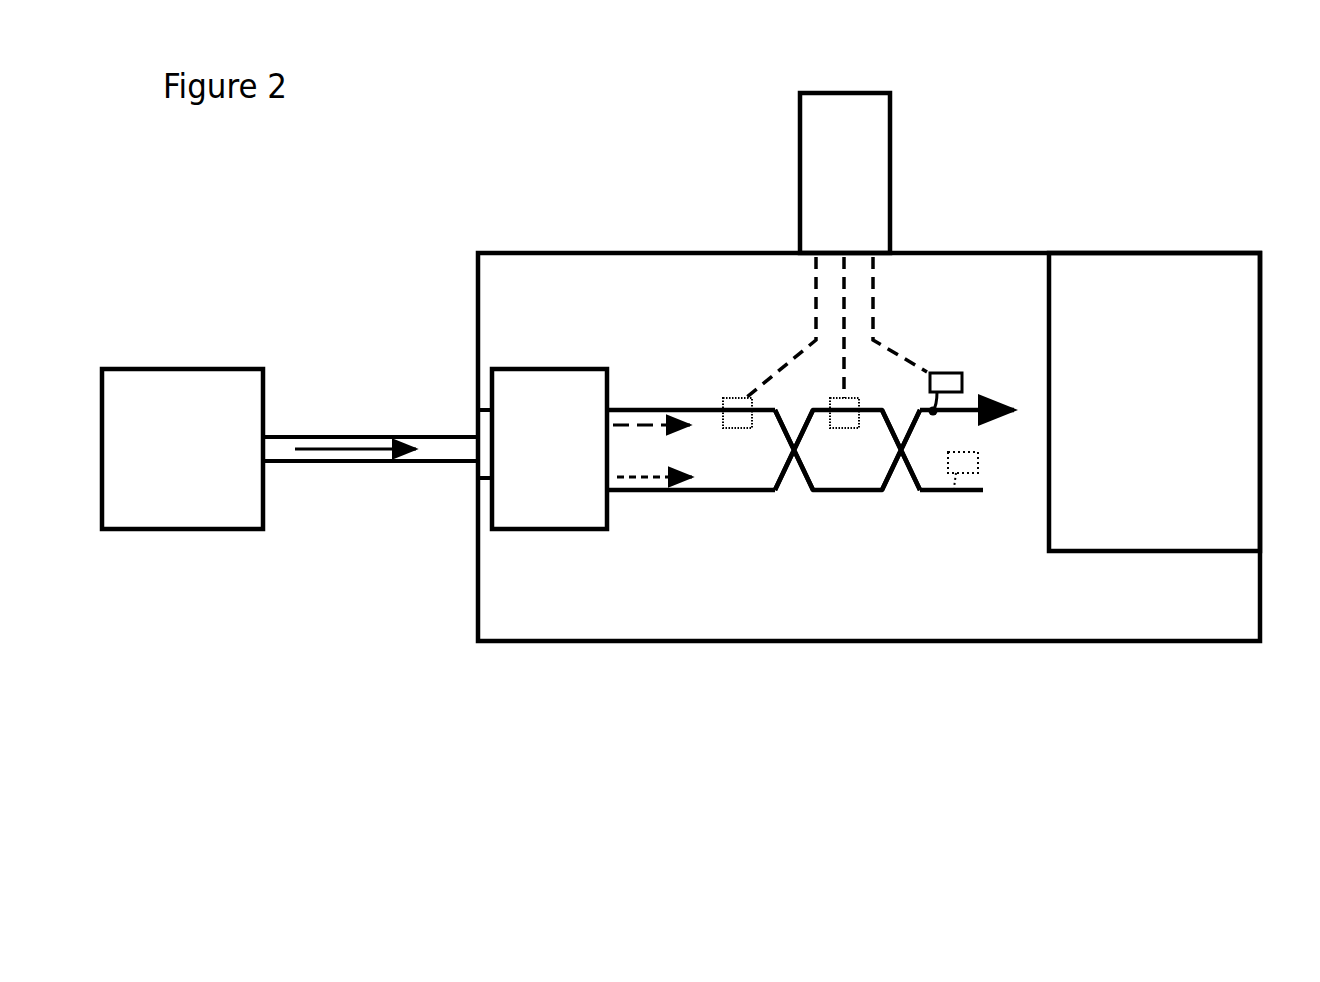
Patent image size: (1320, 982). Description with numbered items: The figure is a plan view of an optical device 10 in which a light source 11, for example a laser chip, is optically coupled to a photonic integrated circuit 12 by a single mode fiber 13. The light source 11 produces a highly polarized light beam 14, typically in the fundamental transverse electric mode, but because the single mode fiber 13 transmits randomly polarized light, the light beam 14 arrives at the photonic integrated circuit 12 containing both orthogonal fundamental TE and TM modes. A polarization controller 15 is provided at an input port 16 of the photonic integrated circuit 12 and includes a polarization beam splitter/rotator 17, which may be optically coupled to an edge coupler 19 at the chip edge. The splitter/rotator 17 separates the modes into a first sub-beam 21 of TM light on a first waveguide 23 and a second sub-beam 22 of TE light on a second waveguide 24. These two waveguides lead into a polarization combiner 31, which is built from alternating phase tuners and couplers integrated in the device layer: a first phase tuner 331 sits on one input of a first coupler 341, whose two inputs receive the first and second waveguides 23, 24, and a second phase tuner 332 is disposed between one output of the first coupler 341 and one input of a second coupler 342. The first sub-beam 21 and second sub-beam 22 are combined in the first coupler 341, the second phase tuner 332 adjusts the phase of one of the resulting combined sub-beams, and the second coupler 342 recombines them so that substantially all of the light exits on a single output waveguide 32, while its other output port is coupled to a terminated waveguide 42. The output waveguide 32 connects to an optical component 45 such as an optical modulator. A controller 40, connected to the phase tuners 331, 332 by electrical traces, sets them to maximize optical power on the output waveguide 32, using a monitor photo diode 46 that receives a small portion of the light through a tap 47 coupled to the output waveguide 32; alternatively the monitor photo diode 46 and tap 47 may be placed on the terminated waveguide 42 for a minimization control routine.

The optical device 10 is at (418, 194).
The light source 11 is at (167, 505).
The photonic integrated circuit 12 is at (1184, 615).
The single mode fiber 13 is at (335, 437).
The light beam 14 is at (373, 450).
The polarization controller 15 is at (578, 335).
The input port 16 is at (477, 447).
The polarization beam splitter/rotator 17 is at (515, 498).
The edge coupler 19 is at (485, 415).
The first sub-beam 21 is at (690, 408).
The second sub-beam 22 is at (674, 491).
The first waveguide 23 is at (632, 408).
The second waveguide 24 is at (630, 491).
The polarization combiner 31 is at (853, 528).
The output waveguide 32 is at (1009, 417).
The first phase tuner 331 is at (741, 397).
The second phase tuner 332 is at (858, 405).
The first coupler 341 is at (790, 484).
The second coupler 342 is at (893, 485).
The controller 40 is at (837, 245).
The terminated waveguide 42 is at (973, 491).
The optical component 45 is at (1163, 278).
The monitor photo diode 46 is at (962, 373).
The tap 47 is at (945, 405).